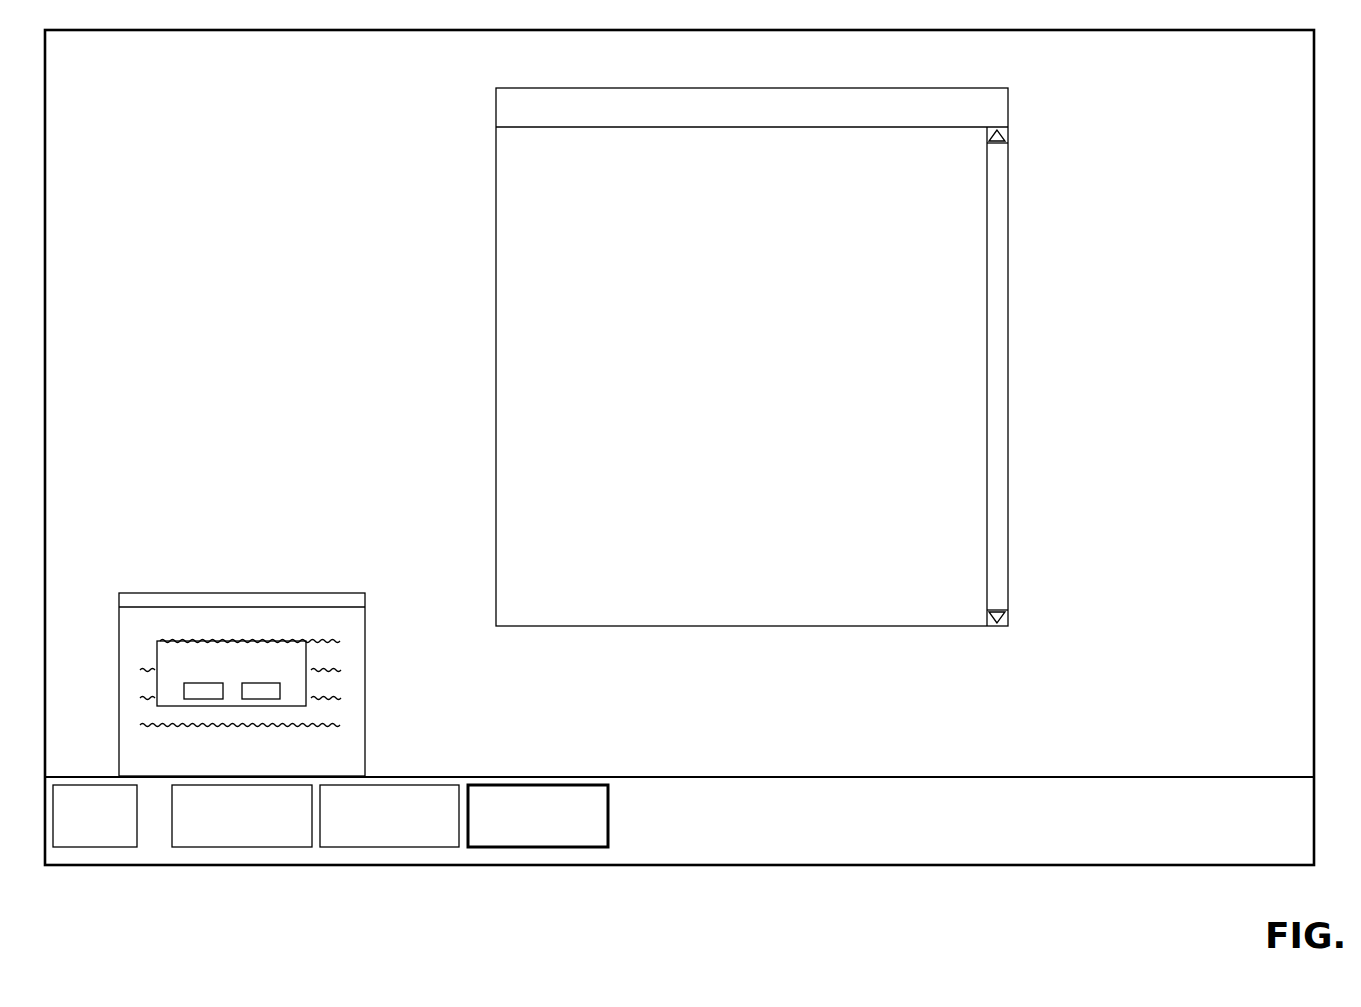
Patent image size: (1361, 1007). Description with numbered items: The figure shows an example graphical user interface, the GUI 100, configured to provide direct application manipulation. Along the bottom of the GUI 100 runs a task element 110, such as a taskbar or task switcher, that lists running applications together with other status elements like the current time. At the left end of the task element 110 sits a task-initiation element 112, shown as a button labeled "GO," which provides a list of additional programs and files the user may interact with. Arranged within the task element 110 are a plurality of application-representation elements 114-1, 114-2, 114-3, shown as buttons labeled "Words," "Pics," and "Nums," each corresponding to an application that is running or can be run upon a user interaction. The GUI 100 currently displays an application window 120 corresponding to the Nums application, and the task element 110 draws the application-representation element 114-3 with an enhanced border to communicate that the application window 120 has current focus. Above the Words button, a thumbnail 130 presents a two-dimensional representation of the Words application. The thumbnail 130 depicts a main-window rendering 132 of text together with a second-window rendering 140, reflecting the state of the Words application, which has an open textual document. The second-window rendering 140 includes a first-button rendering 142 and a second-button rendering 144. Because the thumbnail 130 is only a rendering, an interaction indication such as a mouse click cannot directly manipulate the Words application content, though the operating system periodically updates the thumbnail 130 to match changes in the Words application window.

The graphical user interface 100 is at (738, 892).
The task element 110 is at (807, 828).
The task-initiation element 112 is at (96, 847).
The application-representation element 114-1 is at (243, 847).
The application-representation element 114-2 is at (390, 847).
The application-representation element 114-3 is at (538, 847).
The application window 120 is at (1048, 519).
The thumbnail 130 is at (271, 566).
The main-window rendering 132 is at (255, 760).
The second-window rendering 140 is at (252, 673).
The first-button rendering 142 is at (207, 693).
The second-button rendering 144 is at (263, 692).